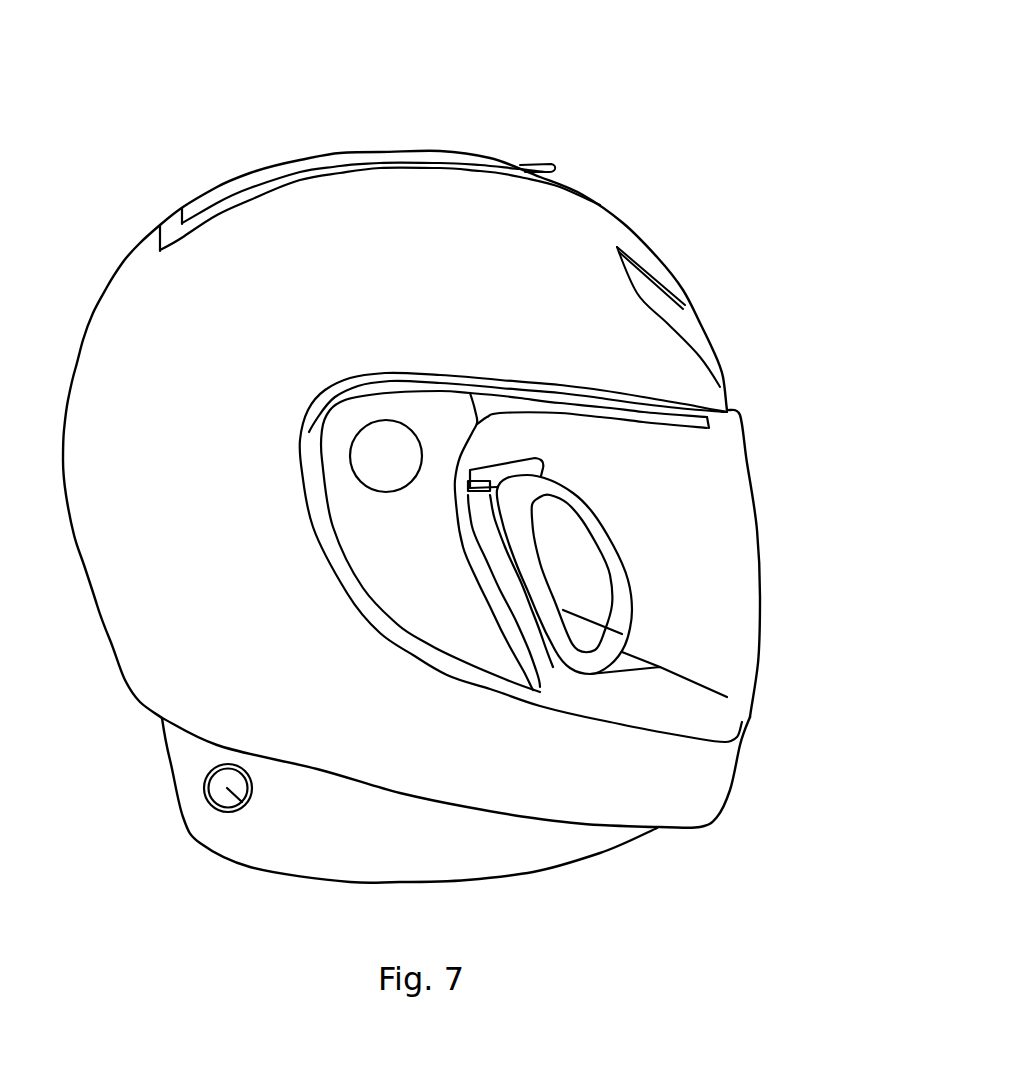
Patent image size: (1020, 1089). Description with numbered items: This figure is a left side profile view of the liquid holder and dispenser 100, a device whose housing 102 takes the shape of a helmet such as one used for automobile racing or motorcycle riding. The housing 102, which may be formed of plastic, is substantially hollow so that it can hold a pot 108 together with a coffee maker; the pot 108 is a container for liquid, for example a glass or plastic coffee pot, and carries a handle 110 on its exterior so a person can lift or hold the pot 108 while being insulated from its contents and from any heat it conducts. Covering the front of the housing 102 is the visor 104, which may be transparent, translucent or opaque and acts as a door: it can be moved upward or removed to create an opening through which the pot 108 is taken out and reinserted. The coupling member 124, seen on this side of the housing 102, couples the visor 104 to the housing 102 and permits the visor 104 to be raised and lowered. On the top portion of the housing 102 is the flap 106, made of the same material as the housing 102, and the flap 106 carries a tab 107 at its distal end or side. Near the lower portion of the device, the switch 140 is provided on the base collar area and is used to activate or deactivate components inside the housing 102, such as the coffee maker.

The liquid holder and dispenser 100 is at (683, 108).
The housing 102 is at (700, 337).
The visor 104 is at (730, 447).
The flap 106 is at (382, 150).
The tab 107 is at (553, 163).
The pot 108 is at (503, 548).
The handle 110 is at (623, 557).
The coupling member 124 is at (393, 475).
The switch 140 is at (242, 810).